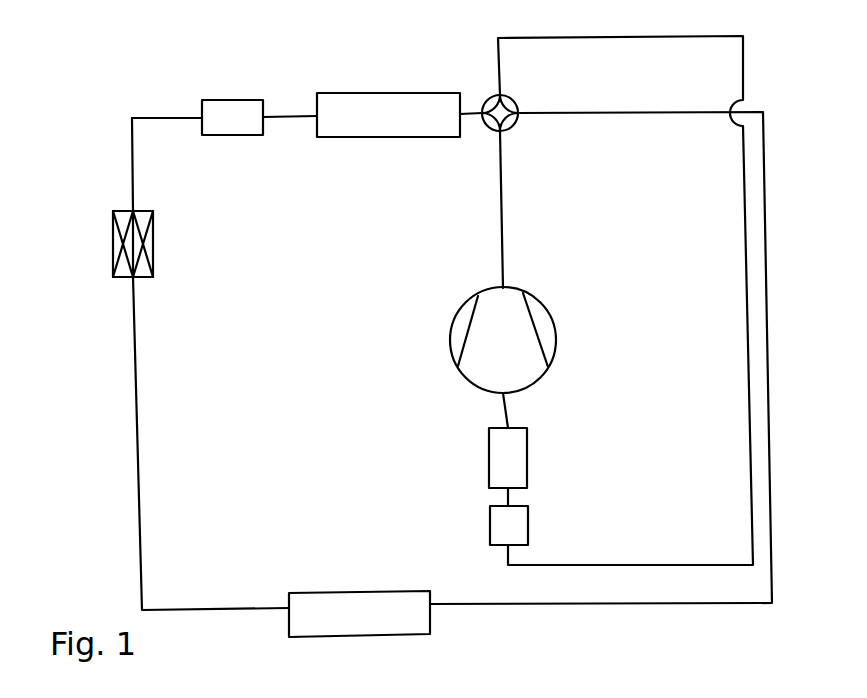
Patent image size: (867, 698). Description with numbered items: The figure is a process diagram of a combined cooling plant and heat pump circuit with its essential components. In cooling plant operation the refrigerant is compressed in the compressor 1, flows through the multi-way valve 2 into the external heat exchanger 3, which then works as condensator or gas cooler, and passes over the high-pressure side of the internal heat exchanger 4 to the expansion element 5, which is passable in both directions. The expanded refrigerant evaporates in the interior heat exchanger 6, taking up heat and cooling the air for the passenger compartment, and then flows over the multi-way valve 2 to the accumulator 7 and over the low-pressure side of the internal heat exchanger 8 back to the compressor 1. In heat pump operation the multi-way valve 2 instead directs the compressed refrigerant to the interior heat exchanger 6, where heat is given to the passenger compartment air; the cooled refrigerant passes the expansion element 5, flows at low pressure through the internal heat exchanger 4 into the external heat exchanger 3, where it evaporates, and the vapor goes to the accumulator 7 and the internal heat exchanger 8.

The compressor 1 is at (543, 332).
The multi-way valve 2 is at (486, 103).
The external heat exchanger 3 is at (350, 116).
The internal heat exchanger (high-pressure side) 4 is at (227, 117).
The expansion element 5 is at (113, 238).
The interior heat exchanger 6 is at (392, 625).
The accumulator 7 is at (509, 523).
The internal heat exchanger (low-pressure side) 8 is at (508, 457).